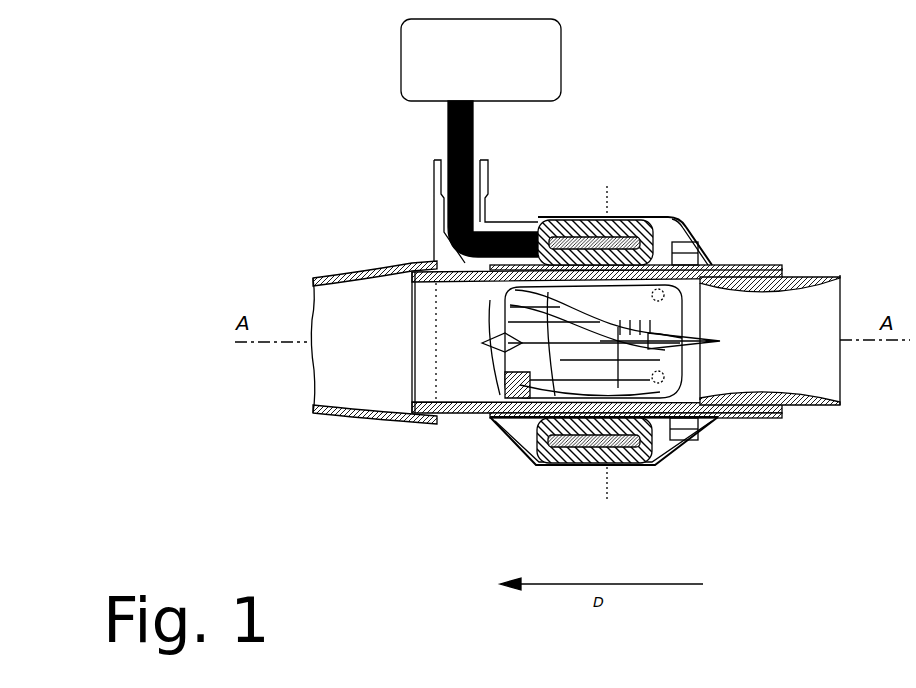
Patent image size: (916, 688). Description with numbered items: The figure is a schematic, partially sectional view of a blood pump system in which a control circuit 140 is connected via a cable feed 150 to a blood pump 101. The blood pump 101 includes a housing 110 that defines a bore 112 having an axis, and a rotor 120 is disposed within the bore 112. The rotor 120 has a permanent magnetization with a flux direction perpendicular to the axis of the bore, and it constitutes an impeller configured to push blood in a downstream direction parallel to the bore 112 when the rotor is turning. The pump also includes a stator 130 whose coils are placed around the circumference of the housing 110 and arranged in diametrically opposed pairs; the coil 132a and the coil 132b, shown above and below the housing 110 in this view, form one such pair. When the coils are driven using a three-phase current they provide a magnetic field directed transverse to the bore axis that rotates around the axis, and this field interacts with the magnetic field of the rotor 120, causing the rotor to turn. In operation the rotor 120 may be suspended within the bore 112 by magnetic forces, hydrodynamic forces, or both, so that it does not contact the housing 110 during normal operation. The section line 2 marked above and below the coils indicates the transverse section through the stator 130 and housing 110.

The blood pump 101 is at (379, 254).
The housing 110 is at (782, 269).
The bore 112 is at (840, 388).
The rotor 120 is at (718, 337).
The stator 130 is at (703, 250).
The coil 132a is at (682, 220).
The coil 132b is at (652, 447).
The control circuit 140 is at (561, 58).
The cable feed 150 is at (473, 146).
The section line 2 is at (606, 345).